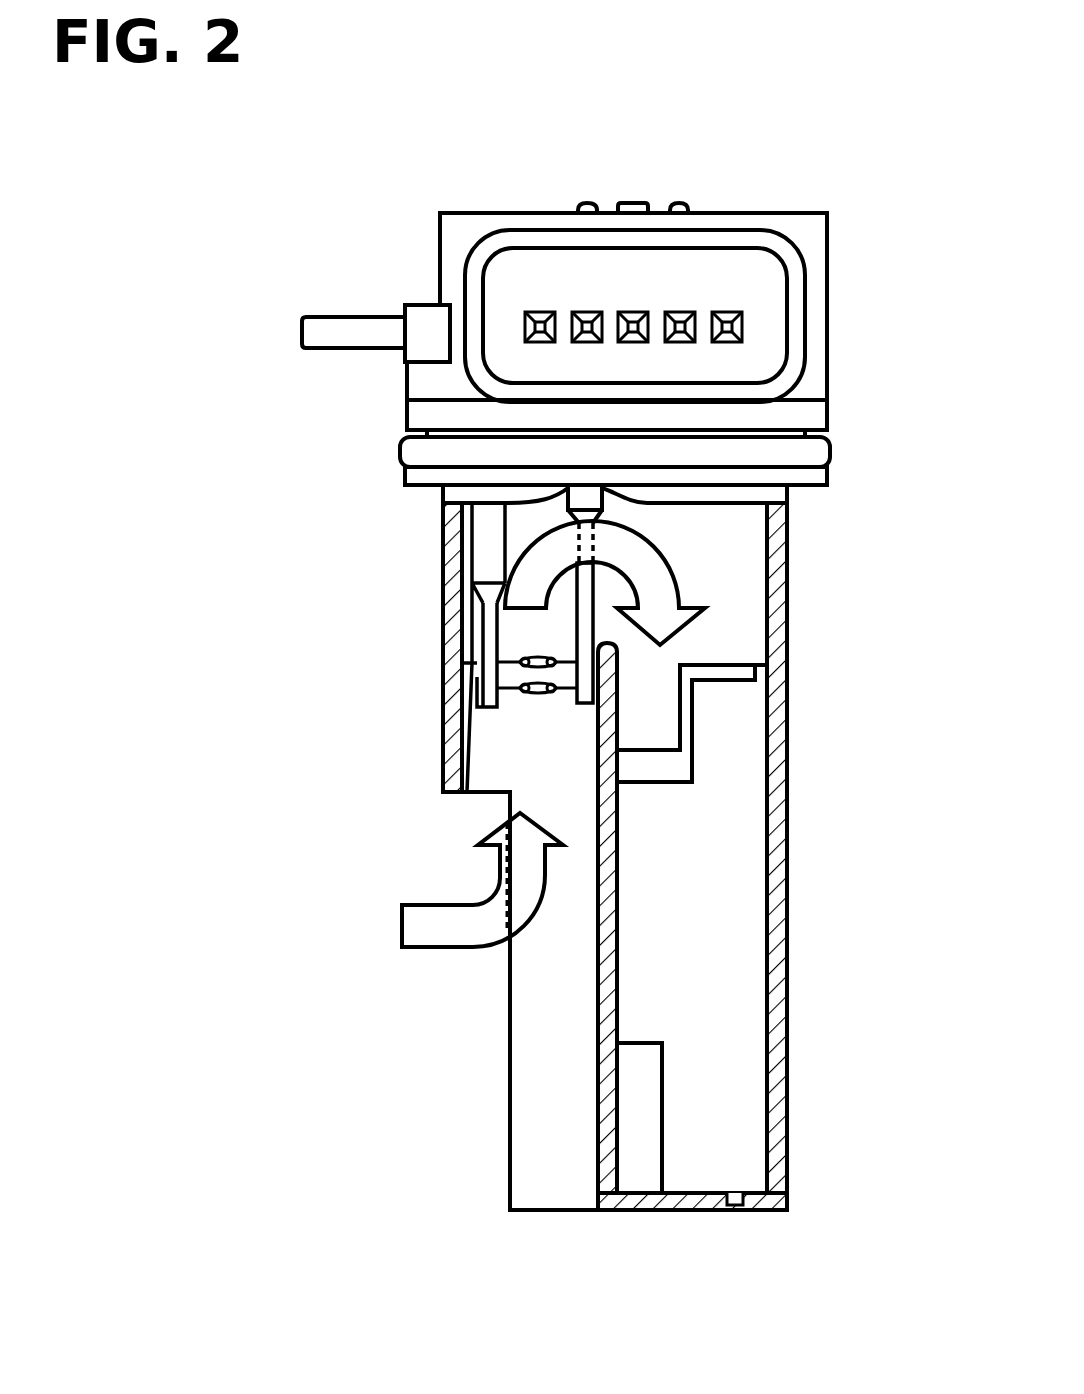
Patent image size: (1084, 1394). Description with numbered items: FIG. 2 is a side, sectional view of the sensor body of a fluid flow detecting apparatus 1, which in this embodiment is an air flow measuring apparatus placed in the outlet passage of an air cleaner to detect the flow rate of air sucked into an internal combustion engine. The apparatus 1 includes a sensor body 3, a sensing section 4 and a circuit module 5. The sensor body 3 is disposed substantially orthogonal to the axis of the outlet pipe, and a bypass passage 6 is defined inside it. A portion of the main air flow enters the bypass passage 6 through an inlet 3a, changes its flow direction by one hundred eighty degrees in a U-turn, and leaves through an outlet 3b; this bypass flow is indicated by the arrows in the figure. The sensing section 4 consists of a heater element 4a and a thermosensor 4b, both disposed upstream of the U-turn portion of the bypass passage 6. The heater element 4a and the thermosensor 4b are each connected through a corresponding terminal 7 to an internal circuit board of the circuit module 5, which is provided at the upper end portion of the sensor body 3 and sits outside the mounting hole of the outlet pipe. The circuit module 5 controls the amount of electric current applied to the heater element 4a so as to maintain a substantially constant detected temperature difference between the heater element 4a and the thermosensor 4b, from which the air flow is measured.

The fluid flow detecting apparatus 1 is at (747, 155).
The sensor body 3 is at (790, 810).
The inlet 3a is at (507, 1092).
The outlet 3b is at (640, 1170).
The sensing section 4 is at (343, 593).
The heater element 4a is at (537, 655).
The thermosensor 4b is at (533, 683).
The circuit module 5 is at (810, 242).
The bypass passage 6 is at (567, 968).
The terminal 7 is at (478, 680).